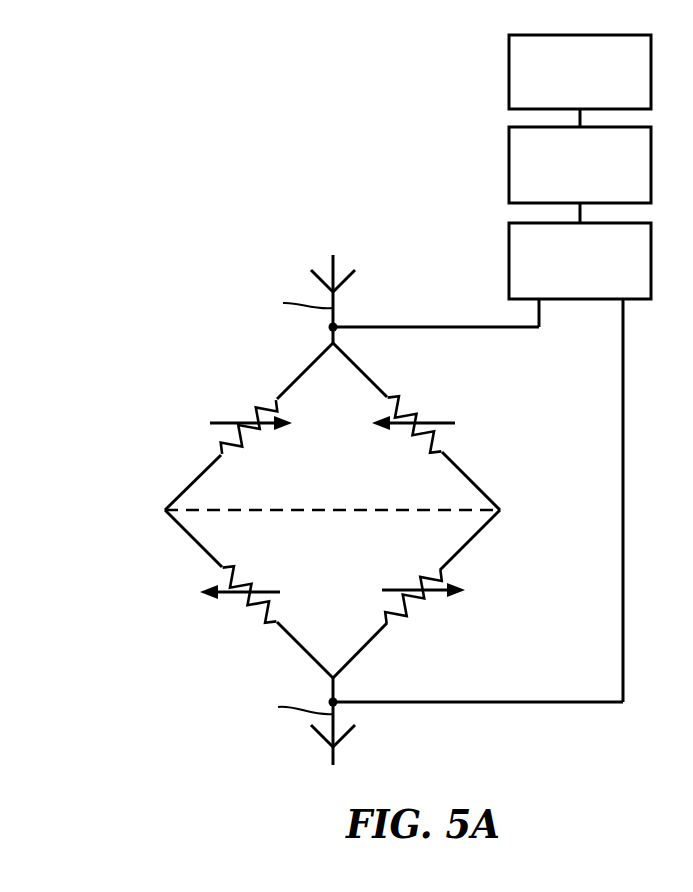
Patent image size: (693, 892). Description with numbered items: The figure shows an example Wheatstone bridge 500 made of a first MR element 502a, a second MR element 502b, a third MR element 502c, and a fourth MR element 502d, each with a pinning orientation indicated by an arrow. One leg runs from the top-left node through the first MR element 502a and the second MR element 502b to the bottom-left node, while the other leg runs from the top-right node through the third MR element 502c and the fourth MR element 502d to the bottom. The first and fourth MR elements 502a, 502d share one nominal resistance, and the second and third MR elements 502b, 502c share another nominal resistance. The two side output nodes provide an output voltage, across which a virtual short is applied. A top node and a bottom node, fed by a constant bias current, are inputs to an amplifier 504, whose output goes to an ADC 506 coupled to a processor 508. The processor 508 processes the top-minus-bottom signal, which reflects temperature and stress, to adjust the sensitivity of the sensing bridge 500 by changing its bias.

The Wheatstone bridge 500 is at (336, 203).
The first MR element 502a is at (227, 435).
The second MR element 502b is at (260, 555).
The third MR element 502c is at (428, 430).
The fourth MR element 502d is at (420, 577).
The amplifier 504 is at (580, 261).
The ADC 506 is at (580, 165).
The processor 508 is at (580, 72).